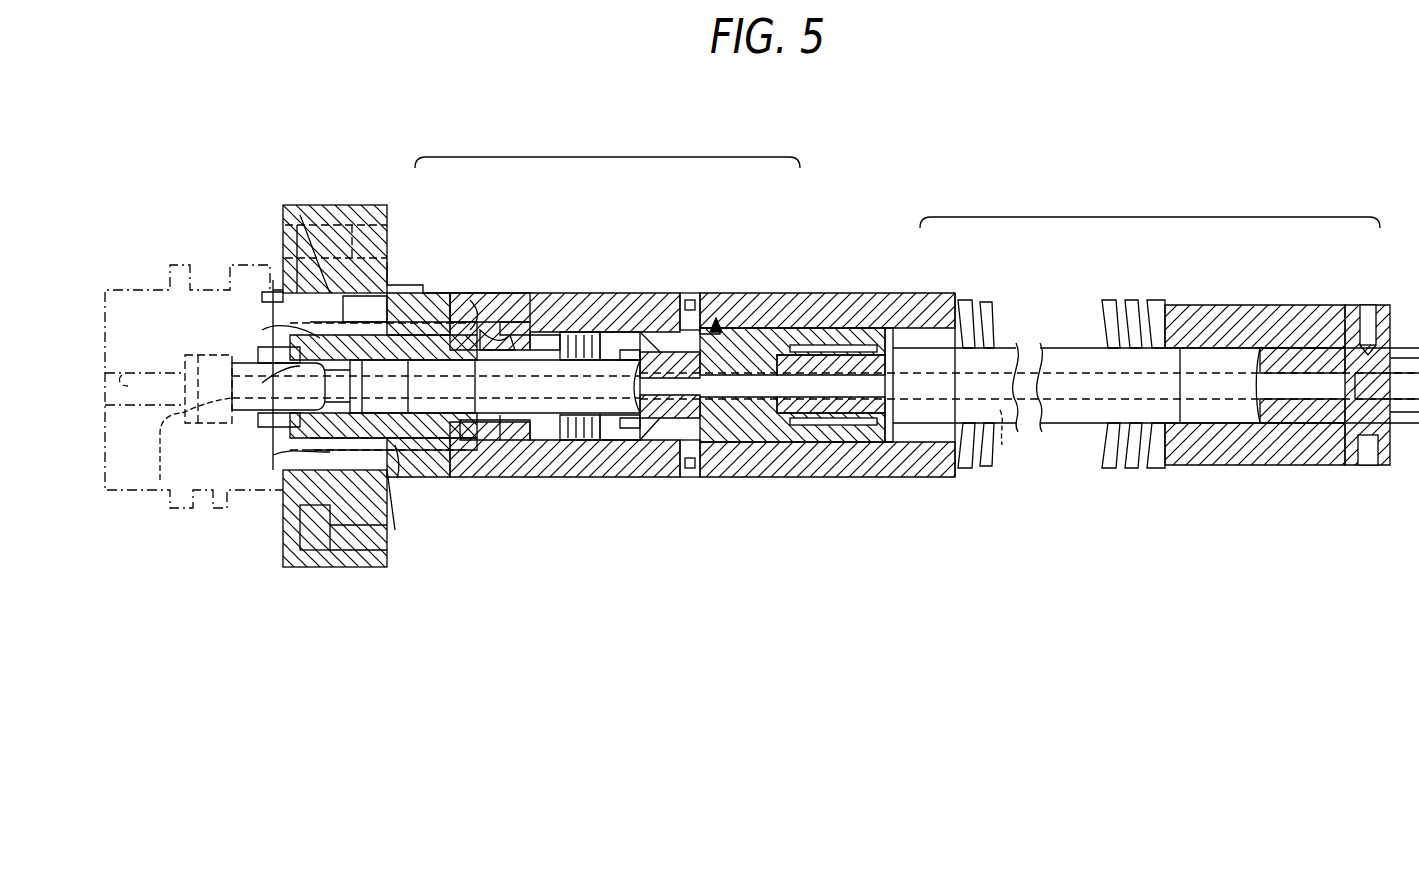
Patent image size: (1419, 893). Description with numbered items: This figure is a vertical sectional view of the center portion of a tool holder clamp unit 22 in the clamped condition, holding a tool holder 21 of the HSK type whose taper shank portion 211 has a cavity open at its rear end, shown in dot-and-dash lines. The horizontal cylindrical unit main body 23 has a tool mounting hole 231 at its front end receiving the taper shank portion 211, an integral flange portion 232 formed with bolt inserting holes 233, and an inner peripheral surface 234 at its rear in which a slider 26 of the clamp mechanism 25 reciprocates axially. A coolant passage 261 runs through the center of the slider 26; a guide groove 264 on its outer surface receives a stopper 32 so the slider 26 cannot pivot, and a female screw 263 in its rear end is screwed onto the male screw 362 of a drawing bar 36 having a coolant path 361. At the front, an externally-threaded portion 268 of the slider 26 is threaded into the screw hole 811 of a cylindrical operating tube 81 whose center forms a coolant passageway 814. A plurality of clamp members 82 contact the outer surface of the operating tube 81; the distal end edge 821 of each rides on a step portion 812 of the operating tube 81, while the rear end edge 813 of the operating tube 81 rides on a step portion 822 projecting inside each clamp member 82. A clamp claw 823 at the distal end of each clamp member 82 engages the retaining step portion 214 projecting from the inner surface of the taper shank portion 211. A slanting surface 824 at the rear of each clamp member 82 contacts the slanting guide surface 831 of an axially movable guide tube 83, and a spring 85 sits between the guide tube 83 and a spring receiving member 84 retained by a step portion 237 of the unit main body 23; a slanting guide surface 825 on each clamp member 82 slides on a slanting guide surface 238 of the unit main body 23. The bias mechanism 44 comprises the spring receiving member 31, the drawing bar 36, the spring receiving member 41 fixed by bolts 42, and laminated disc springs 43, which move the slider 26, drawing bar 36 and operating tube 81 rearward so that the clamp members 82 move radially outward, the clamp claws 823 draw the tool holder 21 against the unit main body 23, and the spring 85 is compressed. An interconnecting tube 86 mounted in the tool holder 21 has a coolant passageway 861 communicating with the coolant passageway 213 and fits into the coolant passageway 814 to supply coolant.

The tool holder 21 is at (140, 290).
The tool holder clamp unit 22 is at (858, 168).
The unit main body 23 is at (570, 300).
The clamp mechanism 25 is at (607, 144).
The slider 26 is at (770, 325).
The spring receiving member 31 is at (935, 293).
The stopper 32 is at (685, 300).
The drawing bar 36 is at (985, 352).
The spring receiving member 41 is at (1250, 305).
The bolts 42 is at (1363, 305).
The disc springs 43 is at (1110, 300).
The bias mechanism 44 is at (1150, 204).
The operating tube 81 is at (273, 437).
The clamp members 82 is at (410, 293).
The guide tube 83 is at (540, 335).
The spring receiving member 84 is at (625, 332).
The spring 85 is at (590, 332).
The interconnecting tube 86 is at (158, 485).
The taper shank portion 211 is at (395, 530).
The coolant passageway 213 is at (122, 375).
The retaining step portion 214 is at (389, 262).
The tool mounting hole 231 is at (270, 292).
The flange portion 232 is at (338, 205).
The bolt inserting holes 233 is at (348, 550).
The inner peripheral surface 234 is at (578, 445).
The step portion 237 is at (630, 450).
The slanting guide surface 238 is at (475, 300).
The coolant passage 261 is at (755, 445).
The female screw 263 is at (838, 425).
The guide groove 264 is at (716, 318).
The externally-threaded portion 268 is at (398, 478).
The coolant path 361 is at (1004, 440).
The male screw 362 is at (835, 355).
The screw hole 811 is at (470, 401).
The step portion 812 is at (273, 457).
The rear end edge 813 is at (478, 440).
The coolant passageway 814 is at (325, 389).
The distal end edge 821 is at (268, 318).
The step portion 822 is at (484, 330).
The clamp claw 823 is at (297, 225).
The slanting surface 824 is at (520, 440).
The slanting guide surface 825 is at (455, 300).
The slanting guide surface 831 is at (510, 322).
The coolant passageway 861 is at (225, 385).